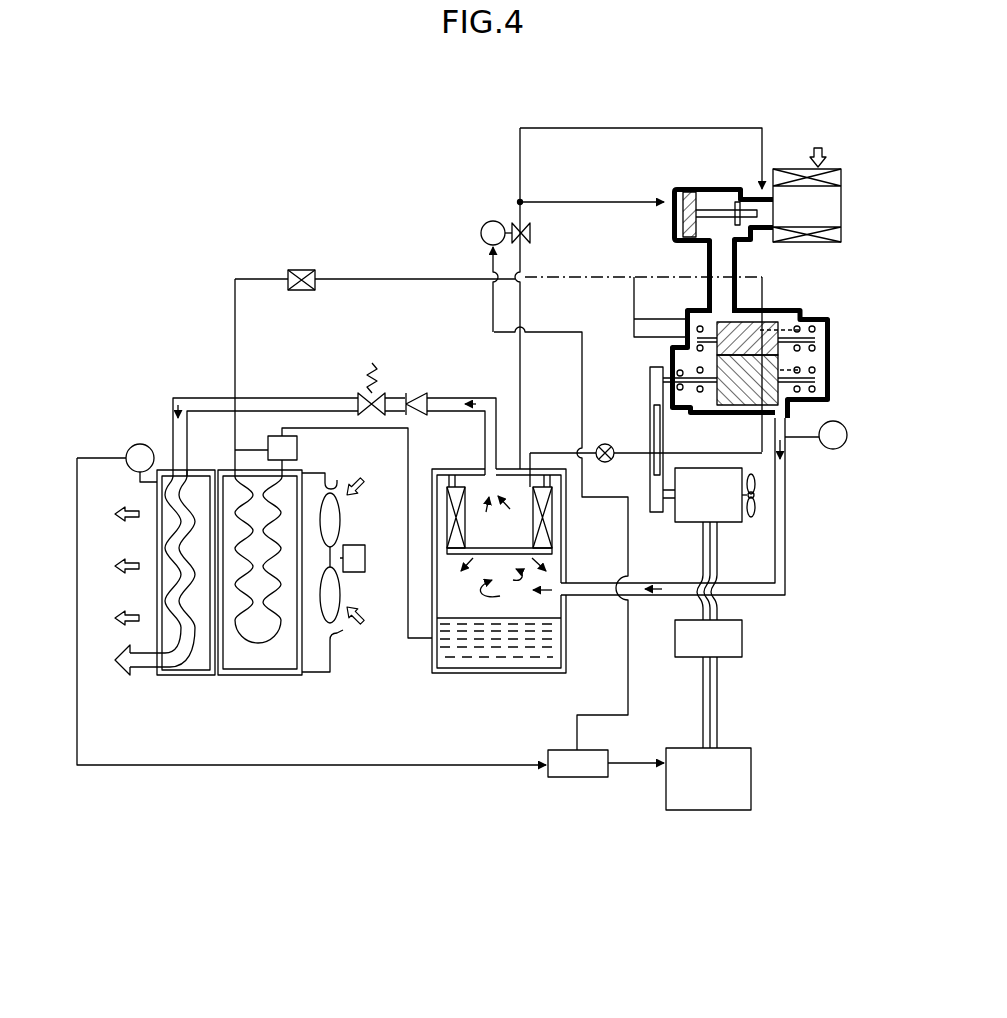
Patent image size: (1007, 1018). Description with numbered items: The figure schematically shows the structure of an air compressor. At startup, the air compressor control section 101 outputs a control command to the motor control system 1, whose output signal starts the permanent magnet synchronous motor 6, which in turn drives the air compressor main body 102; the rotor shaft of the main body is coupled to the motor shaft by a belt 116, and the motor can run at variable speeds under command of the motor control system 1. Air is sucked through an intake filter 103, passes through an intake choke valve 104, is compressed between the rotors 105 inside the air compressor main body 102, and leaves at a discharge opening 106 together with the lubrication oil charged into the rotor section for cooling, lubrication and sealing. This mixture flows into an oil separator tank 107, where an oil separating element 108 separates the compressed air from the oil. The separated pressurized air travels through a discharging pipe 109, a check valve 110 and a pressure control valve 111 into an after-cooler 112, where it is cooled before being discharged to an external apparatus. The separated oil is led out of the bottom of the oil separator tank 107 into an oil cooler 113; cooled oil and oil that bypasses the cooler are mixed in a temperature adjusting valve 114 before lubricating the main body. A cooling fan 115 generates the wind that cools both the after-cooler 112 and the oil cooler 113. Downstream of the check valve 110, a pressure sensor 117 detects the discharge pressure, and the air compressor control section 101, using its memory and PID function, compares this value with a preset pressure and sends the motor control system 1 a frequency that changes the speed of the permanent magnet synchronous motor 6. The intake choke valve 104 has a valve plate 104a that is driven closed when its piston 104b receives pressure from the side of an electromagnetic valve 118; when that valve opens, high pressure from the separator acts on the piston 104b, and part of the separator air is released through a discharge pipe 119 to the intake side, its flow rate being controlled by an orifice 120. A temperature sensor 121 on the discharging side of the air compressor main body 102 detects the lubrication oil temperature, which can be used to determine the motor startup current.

The motor control system 1 is at (742, 636).
The permanent magnet synchronous motor 6 is at (688, 523).
The air compressor control section 101 is at (710, 812).
The air compressor main body 102 is at (832, 333).
The intake filter 103 is at (835, 168).
The intake choke valve 104 is at (681, 225).
The valve plate 104a is at (737, 187).
The piston 104b is at (668, 220).
The rotors 105 is at (770, 320).
The discharge opening 106 is at (783, 409).
The oil separator tank 107 is at (567, 560).
The oil separating element 108 is at (551, 513).
The discharging pipe 109 is at (481, 393).
The check valve 110 is at (425, 393).
The pressure control valve 111 is at (383, 393).
The after-cooler 112 is at (193, 663).
The oil cooler 113 is at (268, 674).
The temperature adjusting valve 114 is at (297, 448).
The cooling fan 115 is at (340, 592).
The belt 116 is at (650, 427).
The pressure sensor 117 is at (140, 444).
The electromagnetic valve 118 is at (491, 221).
The discharge pipe 119 is at (543, 127).
The orifice 120 is at (612, 125).
The temperature sensor 121 is at (838, 449).